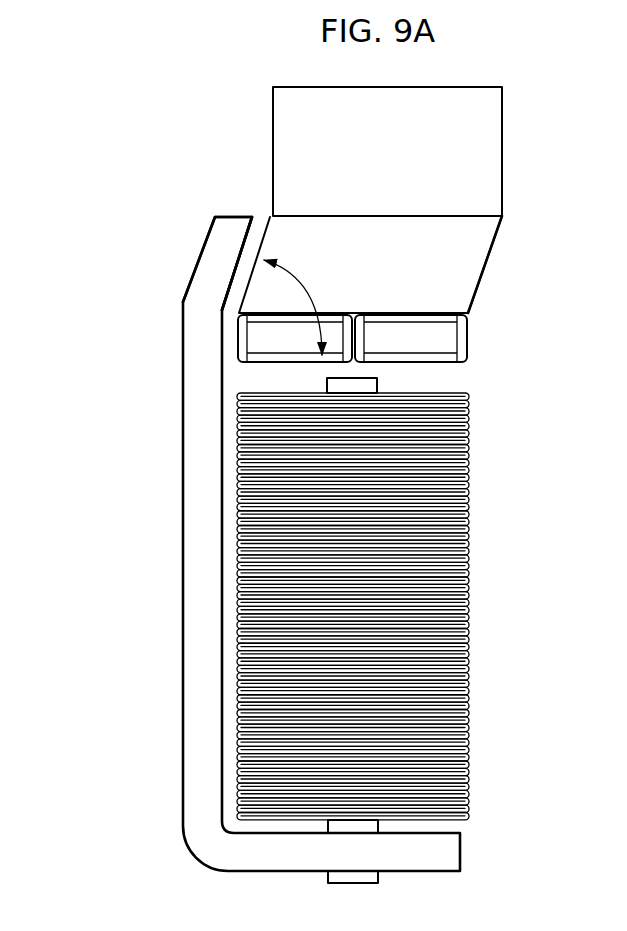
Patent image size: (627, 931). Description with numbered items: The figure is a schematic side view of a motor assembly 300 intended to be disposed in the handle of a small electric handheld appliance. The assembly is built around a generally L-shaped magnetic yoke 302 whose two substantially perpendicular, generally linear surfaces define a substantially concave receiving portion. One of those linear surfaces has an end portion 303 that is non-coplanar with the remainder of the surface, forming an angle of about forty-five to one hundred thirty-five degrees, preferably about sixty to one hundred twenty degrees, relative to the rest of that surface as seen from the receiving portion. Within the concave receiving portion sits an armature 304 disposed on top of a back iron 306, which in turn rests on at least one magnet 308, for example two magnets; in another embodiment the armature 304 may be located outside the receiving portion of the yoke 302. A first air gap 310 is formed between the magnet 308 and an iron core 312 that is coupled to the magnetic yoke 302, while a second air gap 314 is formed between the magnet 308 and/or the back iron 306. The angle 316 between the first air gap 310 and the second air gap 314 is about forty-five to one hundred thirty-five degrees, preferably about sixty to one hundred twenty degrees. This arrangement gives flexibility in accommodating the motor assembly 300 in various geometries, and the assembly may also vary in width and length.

The motor assembly 300 is at (222, 88).
The magnetic yoke 302 is at (183, 654).
The end portion 303 is at (200, 262).
The armature 304 is at (502, 150).
The back iron 306 is at (497, 258).
The magnet 308 is at (468, 337).
The first air gap 310 is at (268, 373).
The iron core 312 is at (378, 384).
The second air gap 314 is at (260, 228).
The angle 316 is at (302, 286).